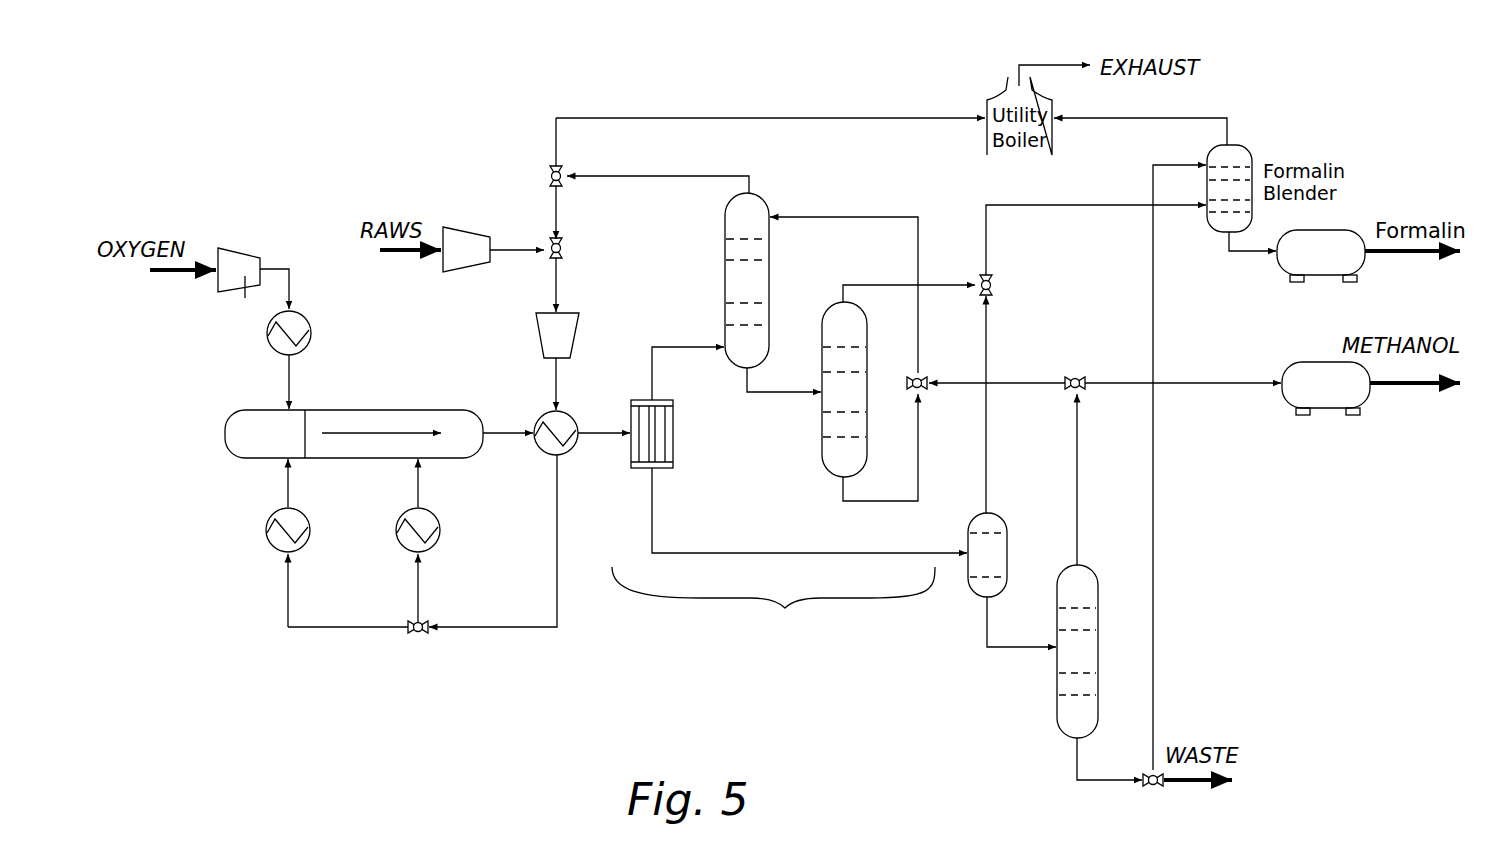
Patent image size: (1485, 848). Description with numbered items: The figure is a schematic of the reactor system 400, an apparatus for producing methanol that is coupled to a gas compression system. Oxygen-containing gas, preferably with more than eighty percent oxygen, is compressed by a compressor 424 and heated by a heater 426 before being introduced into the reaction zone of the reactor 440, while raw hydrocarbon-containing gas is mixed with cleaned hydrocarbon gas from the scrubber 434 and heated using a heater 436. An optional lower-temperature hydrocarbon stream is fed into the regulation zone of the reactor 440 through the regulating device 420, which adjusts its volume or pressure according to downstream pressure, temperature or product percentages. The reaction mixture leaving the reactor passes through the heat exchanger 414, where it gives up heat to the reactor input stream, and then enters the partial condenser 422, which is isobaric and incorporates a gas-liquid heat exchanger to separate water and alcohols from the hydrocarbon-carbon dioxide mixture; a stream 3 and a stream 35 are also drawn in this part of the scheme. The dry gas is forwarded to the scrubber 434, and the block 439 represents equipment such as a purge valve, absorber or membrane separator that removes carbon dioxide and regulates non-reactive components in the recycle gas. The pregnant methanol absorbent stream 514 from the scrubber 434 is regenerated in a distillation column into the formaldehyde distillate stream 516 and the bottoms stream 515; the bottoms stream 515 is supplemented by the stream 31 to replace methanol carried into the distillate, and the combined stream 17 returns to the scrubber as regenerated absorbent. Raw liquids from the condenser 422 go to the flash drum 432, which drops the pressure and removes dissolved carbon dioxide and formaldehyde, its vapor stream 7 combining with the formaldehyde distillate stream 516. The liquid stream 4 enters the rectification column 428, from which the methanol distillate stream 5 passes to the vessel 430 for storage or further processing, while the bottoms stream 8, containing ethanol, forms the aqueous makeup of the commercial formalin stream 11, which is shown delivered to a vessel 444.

The reactor system 400 is at (487, 109).
The compressor 424 is at (239, 287).
The rectification column 428 is at (293, 288).
The heater 426 is at (310, 331).
The reactor 440 is at (391, 420).
The heater 436 is at (276, 520).
The regulating device 420 is at (422, 573).
The heat exchanger 414 is at (571, 448).
The partial condenser 422 is at (673, 448).
The recycle gas stream to utility boiler 35 is at (678, 173).
The reactor effluent stream 3 is at (809, 510).
The scrubber 434 is at (762, 272).
The pregnant methanol absorbent stream 514 is at (790, 395).
The formaldehyde distillate stream 516 is at (849, 358).
The bottoms stream 515 is at (865, 503).
The regenerated methanol absorbent stream 17 is at (848, 213).
The methanol makeup stream 31 is at (990, 356).
The flash drum vapor stream 7 is at (990, 456).
The distillate stream 5 is at (1105, 471).
The flash drum 432 is at (994, 549).
The column feed stream 4 is at (1021, 622).
The bottoms stream 8 is at (1080, 775).
The commercial formalin stream 11 is at (1235, 256).
The formalin storage tank 444 is at (1315, 263).
The vessel 430 is at (1320, 393).
The separation equipment block 439 is at (773, 619).